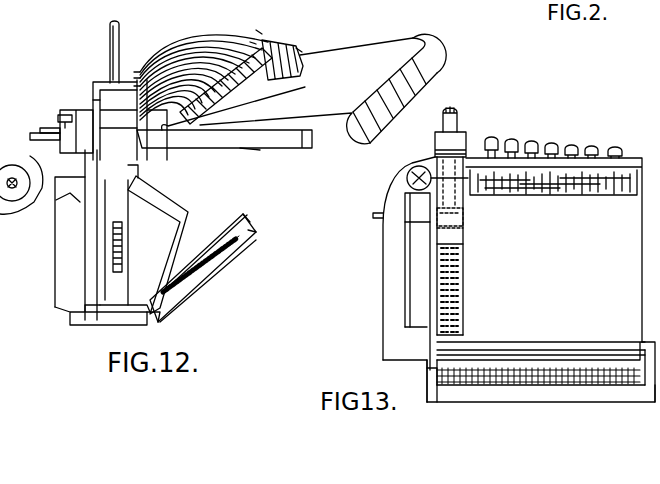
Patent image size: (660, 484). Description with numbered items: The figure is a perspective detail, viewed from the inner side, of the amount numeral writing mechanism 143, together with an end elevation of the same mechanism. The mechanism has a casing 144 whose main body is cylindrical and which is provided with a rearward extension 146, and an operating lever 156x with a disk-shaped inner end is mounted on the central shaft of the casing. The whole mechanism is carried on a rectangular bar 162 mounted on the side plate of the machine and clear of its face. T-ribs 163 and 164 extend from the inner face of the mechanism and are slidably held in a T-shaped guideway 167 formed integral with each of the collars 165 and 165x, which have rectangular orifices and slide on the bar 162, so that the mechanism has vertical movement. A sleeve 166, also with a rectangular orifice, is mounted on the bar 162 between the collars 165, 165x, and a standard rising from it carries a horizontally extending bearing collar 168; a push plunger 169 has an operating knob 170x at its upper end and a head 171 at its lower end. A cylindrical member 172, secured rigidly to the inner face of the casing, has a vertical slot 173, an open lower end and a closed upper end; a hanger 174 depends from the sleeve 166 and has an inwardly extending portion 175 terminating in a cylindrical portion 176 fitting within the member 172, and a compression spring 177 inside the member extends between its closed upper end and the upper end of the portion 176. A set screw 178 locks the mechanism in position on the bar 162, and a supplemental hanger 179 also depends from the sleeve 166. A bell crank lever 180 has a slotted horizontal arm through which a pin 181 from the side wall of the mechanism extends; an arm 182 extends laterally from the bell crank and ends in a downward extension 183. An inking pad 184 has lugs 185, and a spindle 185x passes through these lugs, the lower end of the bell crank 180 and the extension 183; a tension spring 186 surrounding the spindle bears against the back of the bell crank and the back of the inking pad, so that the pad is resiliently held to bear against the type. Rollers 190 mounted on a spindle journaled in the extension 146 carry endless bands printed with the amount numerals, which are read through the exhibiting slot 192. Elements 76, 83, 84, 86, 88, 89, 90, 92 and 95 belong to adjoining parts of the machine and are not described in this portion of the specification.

In FIG. 12, the guide 76 is at (242, 0).
In FIG. 12, the ribbed roller 83 is at (178, 0).
In FIG. 12, the band 84 is at (138, 0).
In FIG. 12, the band 86 is at (84, 0).
In FIG. 12, the band 88 is at (44, 0).
In FIG. 12, the band 89 is at (95, 59).
In FIG. 12, the post 90 is at (112, 8).
In FIG. 12, the band 92 is at (282, 0).
In FIG. 12, the band 95 is at (256, 0).
In FIG. 12, the amount numeral writing mechanism 143 is at (236, 108).
In FIG. 12, the casing 144 is at (352, 147).
In FIG. 13, the casing 144 is at (554, 239).
In FIG. 12, the rearward extension 146 is at (372, 75).
In FIG. 12, the operating lever 156x is at (378, 57).
In FIG. 12, the rectangular bar 162 is at (254, 152).
In FIG. 12, the T-rib 163 is at (82, 116).
In FIG. 12, the T-rib 164 is at (143, 112).
In FIG. 13, the T-rib 164 is at (467, 214).
In FIG. 12, the collar 165 is at (154, 150).
In FIG. 12, the collar 165x is at (50, 130).
In FIG. 12, the sleeve 166 is at (200, 147).
In FIG. 13, the sleeve 166 is at (408, 171).
In FIG. 12, the T-shaped guideway 167 is at (98, 82).
In FIG. 13, the T-shaped guideway 167 is at (418, 148).
In FIG. 12, the bearing collar 168 is at (108, 80).
In FIG. 13, the bearing collar 168 is at (453, 133).
In FIG. 12, the push plunger 169 is at (250, 33).
In FIG. 12, the operating knob 170x is at (40, 143).
In FIG. 12, the head 171 is at (118, 121).
In FIG. 12, the cylindrical member 172 is at (112, 215).
In FIG. 13, the cylindrical member 172 is at (467, 242).
In FIG. 12, the vertical slot 173 is at (122, 240).
In FIG. 12, the hanger 174 is at (85, 217).
In FIG. 13, the hanger 174 is at (390, 283).
In FIG. 12, the inwardly extending portion 175 is at (97, 325).
In FIG. 13, the inwardly extending portion 175 is at (405, 340).
In FIG. 12, the cylindrical portion 176 is at (100, 264).
In FIG. 13, the cylindrical portion 176 is at (472, 327).
In FIG. 13, the compression spring 177 is at (472, 262).
In FIG. 12, the set screw 178 is at (50, 106).
In FIG. 12, the supplemental hanger 179 is at (190, 214).
In FIG. 13, the supplemental hanger 179 is at (405, 193).
In FIG. 12, the bell crank lever 180 is at (200, 280).
In FIG. 13, the bell crank lever 180 is at (425, 302).
In FIG. 12, the pin 181 is at (120, 208).
In FIG. 13, the pin 181 is at (405, 221).
In FIG. 12, the arm 182 is at (252, 240).
In FIG. 13, the arm 182 is at (558, 346).
In FIG. 12, the downward extension 183 is at (250, 228).
In FIG. 13, the downward extension 183 is at (642, 347).
In FIG. 12, the inking pad 184 is at (120, 313).
In FIG. 13, the inking pad 184 is at (425, 395).
In FIG. 12, the lugs 185 is at (148, 314).
In FIG. 13, the lugs 185 is at (425, 372).
In FIG. 12, the spindle 185x is at (252, 250).
In FIG. 13, the spindle 185x is at (556, 382).
In FIG. 12, the tension spring 186 is at (258, 262).
In FIG. 13, the tension spring 186 is at (468, 386).
In FIG. 12, the rollers 190 is at (22, 200).
In FIG. 12, the exhibiting slot 192 is at (434, 47).